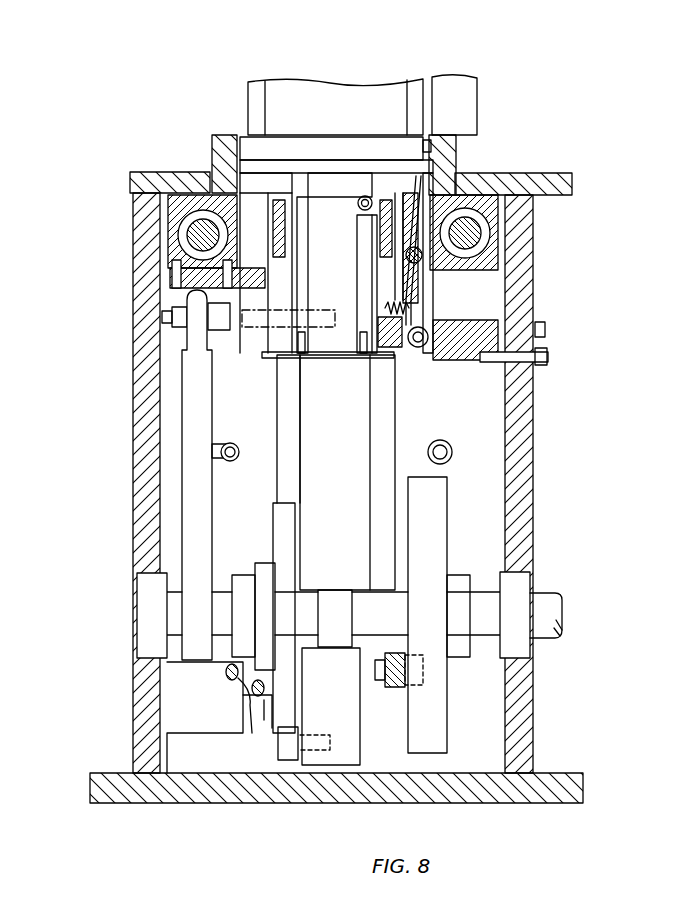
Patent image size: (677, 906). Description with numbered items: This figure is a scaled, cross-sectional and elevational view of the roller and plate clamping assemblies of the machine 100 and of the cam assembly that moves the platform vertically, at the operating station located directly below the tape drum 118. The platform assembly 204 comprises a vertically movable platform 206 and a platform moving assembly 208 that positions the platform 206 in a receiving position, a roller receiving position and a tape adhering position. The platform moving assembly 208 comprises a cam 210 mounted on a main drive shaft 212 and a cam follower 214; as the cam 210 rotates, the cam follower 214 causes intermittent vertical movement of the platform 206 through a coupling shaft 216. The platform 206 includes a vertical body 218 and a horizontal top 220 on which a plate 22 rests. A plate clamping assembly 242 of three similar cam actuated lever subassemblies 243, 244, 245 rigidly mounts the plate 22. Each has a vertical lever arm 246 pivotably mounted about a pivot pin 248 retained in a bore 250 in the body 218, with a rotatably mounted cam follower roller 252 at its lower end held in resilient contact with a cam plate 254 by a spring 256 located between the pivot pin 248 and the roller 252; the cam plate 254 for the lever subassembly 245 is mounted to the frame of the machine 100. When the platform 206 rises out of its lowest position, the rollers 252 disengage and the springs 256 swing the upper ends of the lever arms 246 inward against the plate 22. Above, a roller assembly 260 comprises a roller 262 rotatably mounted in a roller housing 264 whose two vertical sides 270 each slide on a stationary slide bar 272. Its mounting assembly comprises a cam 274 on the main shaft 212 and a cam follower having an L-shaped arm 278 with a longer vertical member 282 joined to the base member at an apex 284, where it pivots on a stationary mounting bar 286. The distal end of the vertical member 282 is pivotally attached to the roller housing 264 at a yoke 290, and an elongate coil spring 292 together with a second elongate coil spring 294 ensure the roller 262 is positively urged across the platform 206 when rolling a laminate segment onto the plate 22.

The machine 100 is at (553, 497).
The tape drum 118 is at (415, 133).
The plate 22 is at (212, 165).
The platform assembly 204 is at (400, 448).
The platform 206 is at (330, 195).
The platform moving assembly 208 is at (330, 812).
The cam 210 is at (275, 722).
The main drive shaft 212 is at (547, 595).
The cam follower 214 is at (362, 742).
The coupling shaft 216 is at (340, 608).
The vertical body 218 is at (227, 352).
The horizontal top 220 is at (408, 176).
The plate clamping assembly 242 is at (345, 165).
The lever subassembly 243 is at (382, 366).
The lever subassembly 244 is at (289, 368).
The lever subassembly 245 is at (432, 188).
The lever arm 246 is at (298, 225).
The pivot pin 248 is at (450, 278).
The bore 250 is at (276, 357).
The cam follower roller 252 is at (362, 358).
The cam plate 254 is at (445, 362).
The spring 256 is at (380, 288).
The roller assembly 260 is at (165, 292).
The roller 262 is at (243, 137).
The roller housing 264 is at (168, 193).
The vertical sides 270 is at (172, 232).
The slide bar 272 is at (205, 236).
The cam 274 is at (450, 532).
The L-shaped arm 278 is at (177, 557).
The vertical member 282 is at (182, 375).
The apex 284 is at (221, 706).
The stationary mounting bar 286 is at (258, 722).
The yoke 290 is at (163, 325).
The elongate coil spring 292 is at (232, 461).
The second elongate coil spring 294 is at (377, 198).